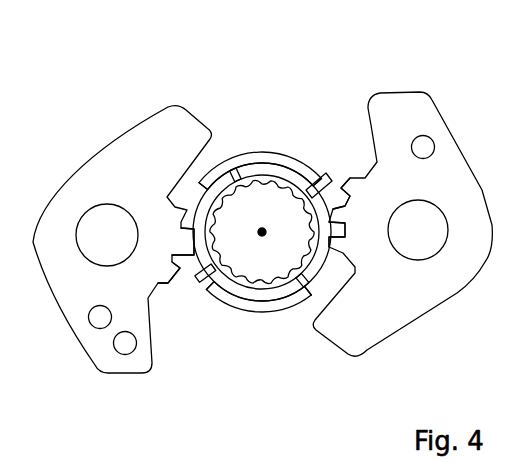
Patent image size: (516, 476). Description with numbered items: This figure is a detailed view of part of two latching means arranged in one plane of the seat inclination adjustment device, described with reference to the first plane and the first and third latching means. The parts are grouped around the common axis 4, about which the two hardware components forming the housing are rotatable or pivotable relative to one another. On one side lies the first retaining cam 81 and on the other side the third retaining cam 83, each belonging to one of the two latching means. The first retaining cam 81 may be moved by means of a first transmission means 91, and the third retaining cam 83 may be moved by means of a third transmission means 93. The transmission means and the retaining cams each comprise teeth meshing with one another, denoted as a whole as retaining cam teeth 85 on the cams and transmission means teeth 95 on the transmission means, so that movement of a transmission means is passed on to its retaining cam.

The common axis 4 is at (263, 222).
The first retaining cam 81 is at (383, 122).
The third retaining cam 83 is at (151, 189).
The retaining cam teeth 85 is at (345, 176).
The first transmission means 91 is at (304, 190).
The third transmission means 93 is at (205, 213).
The transmission means teeth 95 is at (325, 203).